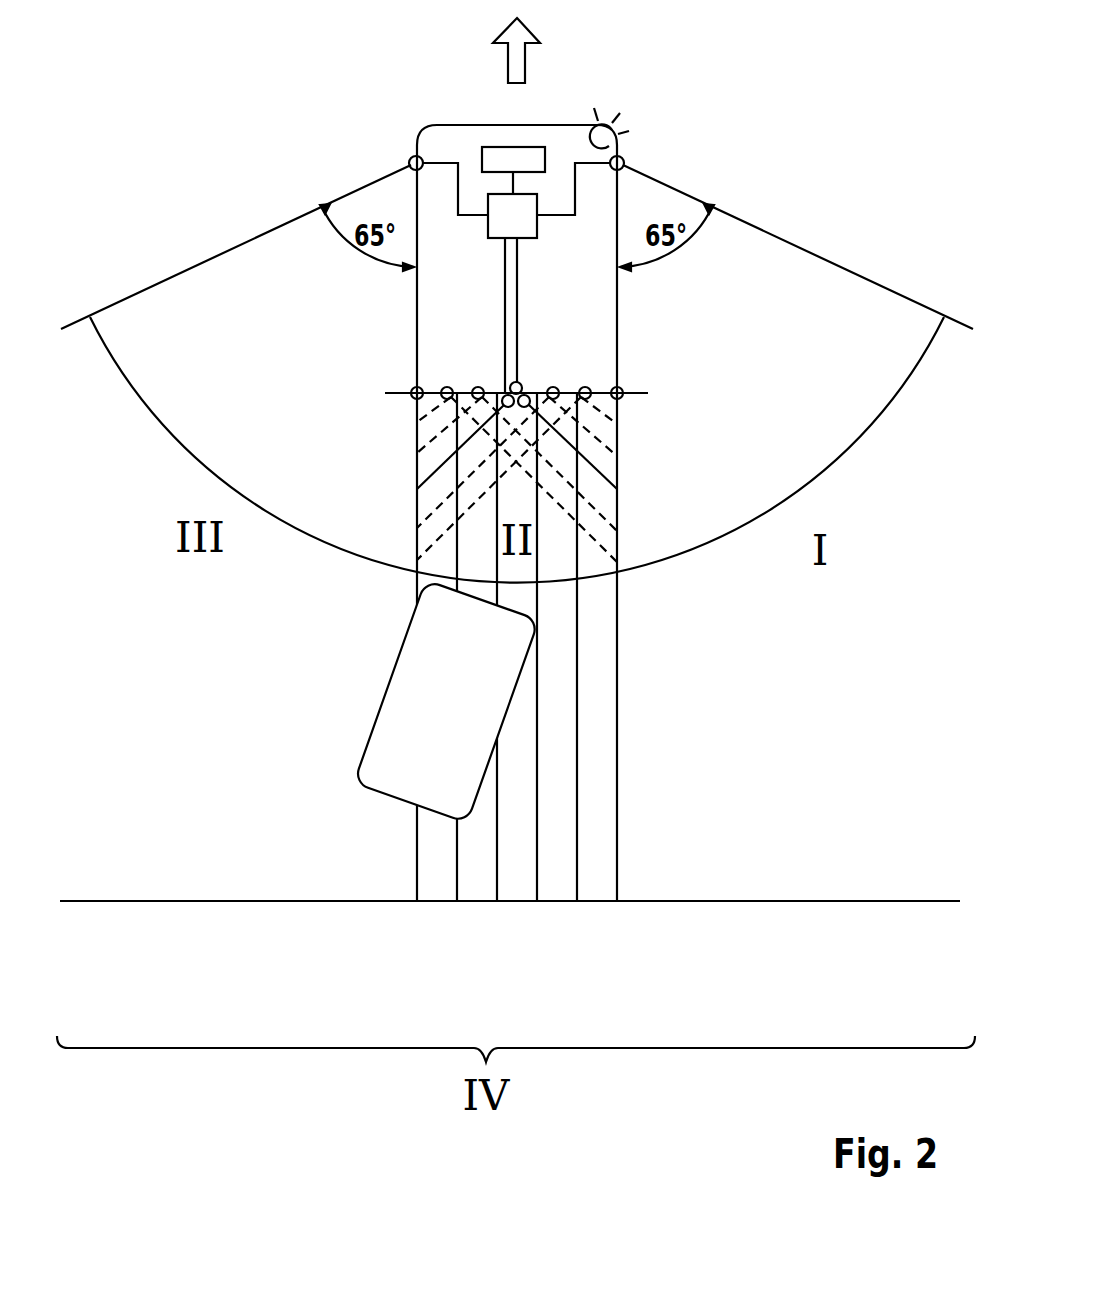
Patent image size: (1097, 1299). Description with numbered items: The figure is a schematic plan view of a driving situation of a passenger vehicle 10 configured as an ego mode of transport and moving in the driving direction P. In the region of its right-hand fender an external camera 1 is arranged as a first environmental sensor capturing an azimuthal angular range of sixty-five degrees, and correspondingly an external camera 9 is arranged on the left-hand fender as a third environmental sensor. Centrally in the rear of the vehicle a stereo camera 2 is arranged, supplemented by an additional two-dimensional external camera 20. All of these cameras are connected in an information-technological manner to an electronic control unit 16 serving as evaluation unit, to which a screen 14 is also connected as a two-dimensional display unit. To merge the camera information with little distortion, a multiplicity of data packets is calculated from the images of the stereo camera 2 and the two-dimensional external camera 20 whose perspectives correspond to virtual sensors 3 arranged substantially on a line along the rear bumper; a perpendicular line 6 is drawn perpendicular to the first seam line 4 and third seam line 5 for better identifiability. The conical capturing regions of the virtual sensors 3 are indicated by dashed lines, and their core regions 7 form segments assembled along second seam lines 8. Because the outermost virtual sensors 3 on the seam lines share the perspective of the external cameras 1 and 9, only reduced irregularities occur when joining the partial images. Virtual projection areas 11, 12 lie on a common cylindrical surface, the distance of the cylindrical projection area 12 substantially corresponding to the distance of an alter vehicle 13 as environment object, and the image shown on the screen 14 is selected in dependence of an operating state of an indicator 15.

The external camera 1 is at (624, 161).
The stereo camera 2 is at (523, 408).
The virtual sensors 3 is at (415, 386).
The first seam line 4 is at (618, 679).
The third seam line 5 is at (417, 492).
The perpendicular line 6 is at (648, 396).
The core regions 7 is at (447, 860).
The second seam lines 8 is at (417, 880).
The external camera 9 is at (410, 159).
The passenger vehicle 10 is at (410, 122).
The virtual projection area 11 is at (874, 404).
The cylindrical projection area 12 is at (593, 573).
The alter vehicle 13 is at (378, 708).
The screen 14 is at (533, 147).
The indicator 15 is at (607, 126).
The electronic control unit 16 is at (487, 227).
The 2D external camera 20 is at (513, 381).
The driving direction P is at (505, 65).